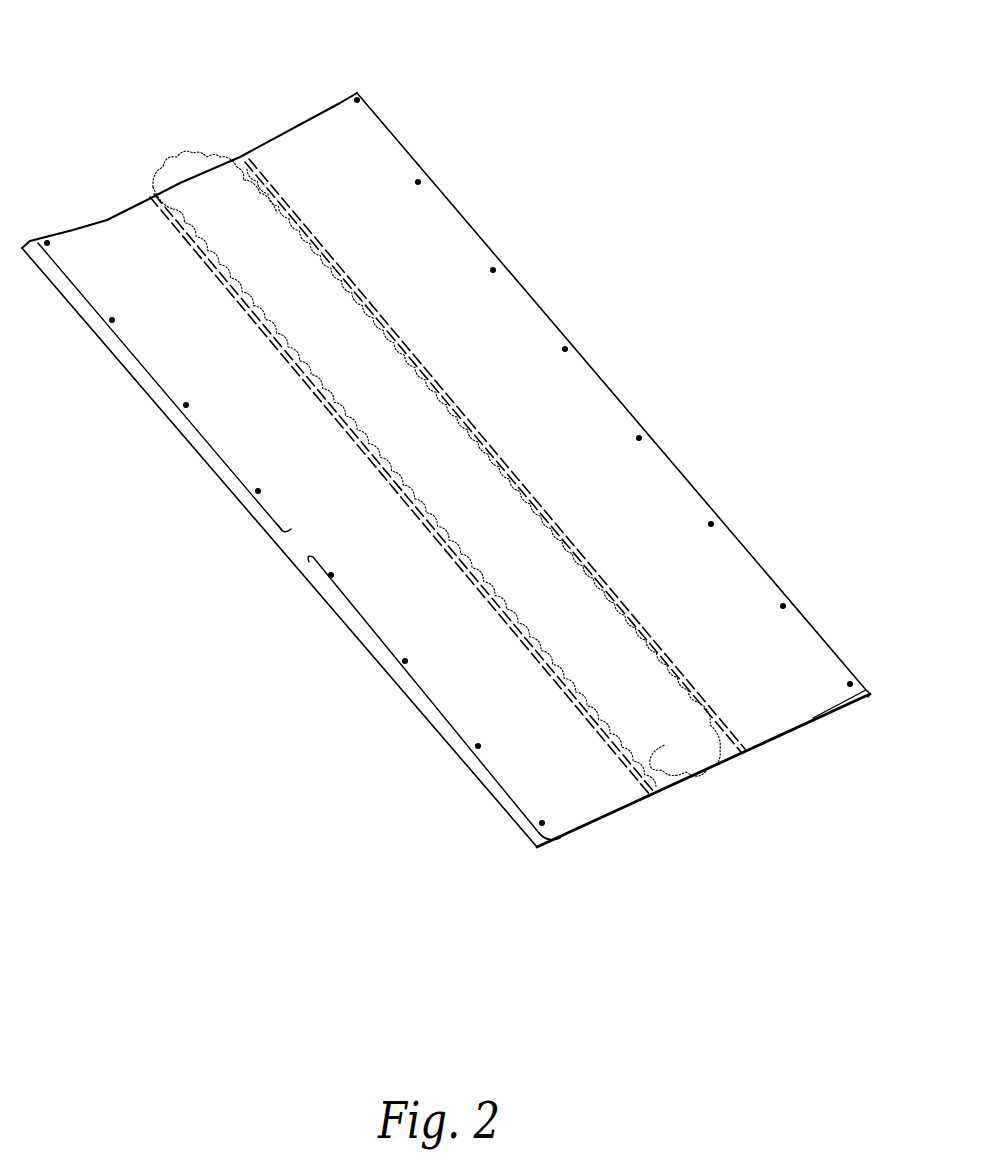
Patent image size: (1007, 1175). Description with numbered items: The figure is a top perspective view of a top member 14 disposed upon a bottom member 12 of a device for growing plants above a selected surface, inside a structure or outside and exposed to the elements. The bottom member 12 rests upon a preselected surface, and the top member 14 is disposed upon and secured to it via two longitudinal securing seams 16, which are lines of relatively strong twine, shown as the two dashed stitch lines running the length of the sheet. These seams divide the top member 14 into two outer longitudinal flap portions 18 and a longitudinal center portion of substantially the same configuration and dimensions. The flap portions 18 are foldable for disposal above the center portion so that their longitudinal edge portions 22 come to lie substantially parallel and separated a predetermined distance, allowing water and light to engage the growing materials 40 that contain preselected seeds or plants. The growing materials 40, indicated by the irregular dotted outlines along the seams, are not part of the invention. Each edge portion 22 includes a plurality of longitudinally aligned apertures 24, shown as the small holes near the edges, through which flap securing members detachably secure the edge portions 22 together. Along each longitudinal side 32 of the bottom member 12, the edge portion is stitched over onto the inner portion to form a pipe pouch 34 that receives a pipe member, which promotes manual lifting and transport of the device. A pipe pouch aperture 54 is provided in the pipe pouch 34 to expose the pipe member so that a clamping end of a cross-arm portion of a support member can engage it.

The bottom member 12 is at (84, 318).
The top member 14 is at (395, 130).
The longitudinal securing seams 16 is at (340, 267).
The outer longitudinal flap portions 18 is at (100, 238).
The longitudinal edge portions 22 is at (457, 210).
The apertures 24 is at (503, 270).
The longitudinal side 32 is at (132, 375).
The pipe pouch 34 is at (865, 697).
The growing materials 40 is at (207, 193).
The pipe pouch apertures 54 is at (286, 528).